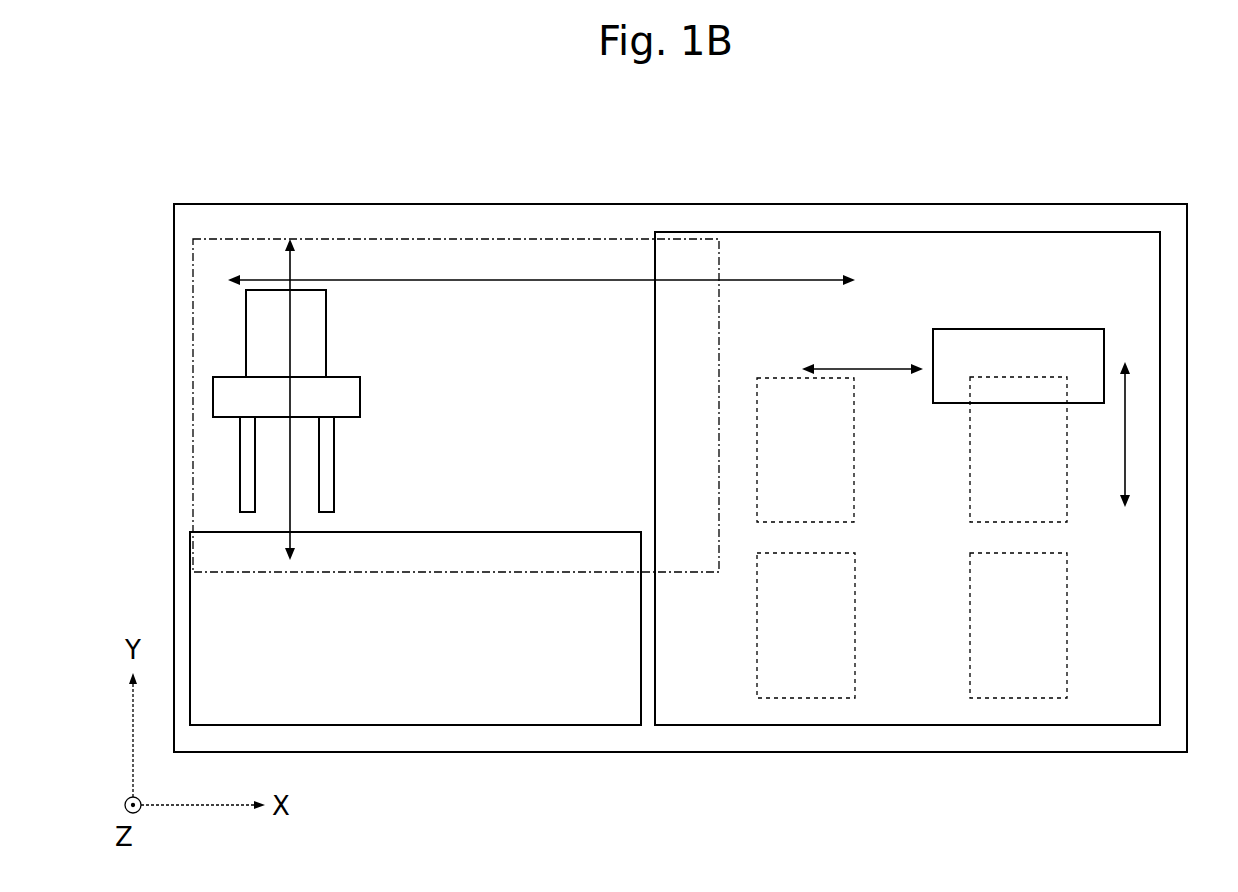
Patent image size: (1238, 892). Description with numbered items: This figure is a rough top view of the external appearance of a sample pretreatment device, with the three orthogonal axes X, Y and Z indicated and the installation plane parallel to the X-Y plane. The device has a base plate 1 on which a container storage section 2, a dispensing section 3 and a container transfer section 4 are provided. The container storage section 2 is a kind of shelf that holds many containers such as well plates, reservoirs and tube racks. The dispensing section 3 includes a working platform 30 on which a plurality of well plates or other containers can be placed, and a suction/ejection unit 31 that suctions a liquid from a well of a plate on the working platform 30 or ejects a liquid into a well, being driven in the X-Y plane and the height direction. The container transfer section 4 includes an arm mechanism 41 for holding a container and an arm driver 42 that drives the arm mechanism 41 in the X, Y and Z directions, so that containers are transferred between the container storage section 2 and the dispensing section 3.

The base plate 1 is at (631, 210).
The container storage section 2 is at (565, 715).
The dispensing section 3 is at (990, 218).
The working platform 30 is at (1068, 238).
The suction/ejection unit 31 is at (1065, 328).
The container transfer section 4 is at (415, 238).
The arm mechanism 41 is at (358, 400).
The arm driver 42 is at (328, 345).